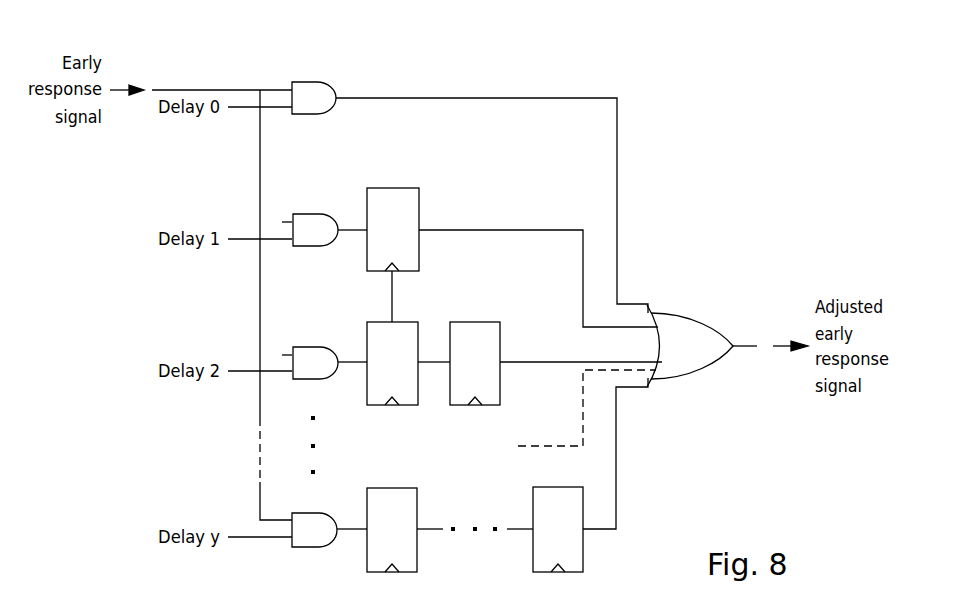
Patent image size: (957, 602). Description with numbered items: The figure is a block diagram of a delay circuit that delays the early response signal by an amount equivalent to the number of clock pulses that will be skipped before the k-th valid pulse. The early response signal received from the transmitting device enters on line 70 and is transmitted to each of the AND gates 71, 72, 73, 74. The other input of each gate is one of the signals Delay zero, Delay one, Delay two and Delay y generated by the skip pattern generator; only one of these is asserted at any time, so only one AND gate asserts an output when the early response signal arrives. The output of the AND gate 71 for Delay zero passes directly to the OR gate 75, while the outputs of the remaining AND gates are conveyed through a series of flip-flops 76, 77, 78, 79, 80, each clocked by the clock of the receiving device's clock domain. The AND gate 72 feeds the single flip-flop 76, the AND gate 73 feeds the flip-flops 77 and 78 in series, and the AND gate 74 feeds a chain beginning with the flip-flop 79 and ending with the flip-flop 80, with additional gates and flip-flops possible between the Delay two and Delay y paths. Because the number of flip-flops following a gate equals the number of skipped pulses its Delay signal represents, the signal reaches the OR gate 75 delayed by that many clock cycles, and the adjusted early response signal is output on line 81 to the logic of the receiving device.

The line 70 is at (202, 90).
The AND gate 71 is at (312, 81).
The AND gate 72 is at (312, 212).
The AND gate 73 is at (312, 345).
The AND gate 74 is at (312, 548).
The OR gate 75 is at (679, 357).
The flip-flop 76 is at (382, 241).
The flip-flop 77 is at (382, 373).
The flip-flop 78 is at (464, 373).
The flip-flop 79 is at (382, 539).
The flip-flop 80 is at (547, 539).
The line 81 is at (749, 343).